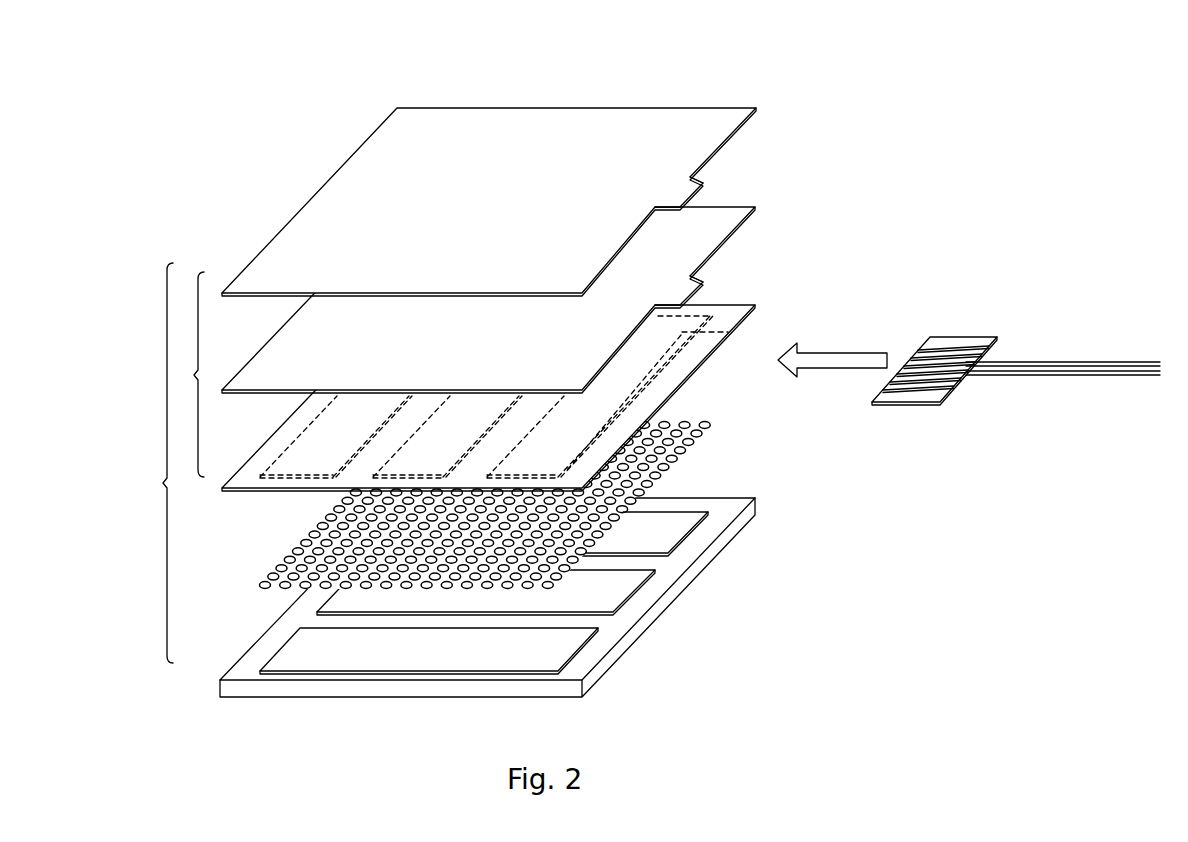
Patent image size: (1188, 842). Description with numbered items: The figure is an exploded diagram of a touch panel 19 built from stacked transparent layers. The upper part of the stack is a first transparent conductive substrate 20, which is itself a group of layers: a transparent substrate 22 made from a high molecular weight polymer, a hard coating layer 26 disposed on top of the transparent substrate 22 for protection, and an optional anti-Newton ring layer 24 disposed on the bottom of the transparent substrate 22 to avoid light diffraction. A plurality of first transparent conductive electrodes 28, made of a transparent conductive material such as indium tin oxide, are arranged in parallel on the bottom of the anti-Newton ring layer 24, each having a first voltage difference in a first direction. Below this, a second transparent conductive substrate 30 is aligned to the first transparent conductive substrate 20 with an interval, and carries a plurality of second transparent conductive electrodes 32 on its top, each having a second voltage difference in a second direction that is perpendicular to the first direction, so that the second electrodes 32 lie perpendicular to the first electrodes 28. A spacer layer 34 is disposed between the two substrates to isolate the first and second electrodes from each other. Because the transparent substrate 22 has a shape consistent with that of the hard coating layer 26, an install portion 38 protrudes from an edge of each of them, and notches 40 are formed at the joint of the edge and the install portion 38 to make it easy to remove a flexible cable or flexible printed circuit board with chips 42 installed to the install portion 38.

The touch panel 19 is at (155, 463).
The first transparent conductive substrate 20 is at (187, 374).
The transparent substrate 22 is at (722, 228).
The anti-Newton ring layer 24 is at (670, 382).
The hard coating layer 26 is at (679, 118).
The first transparent conductive electrodes 28 is at (728, 333).
The second transparent conductive substrate 30 is at (687, 595).
The second transparent conductive electrodes 32 is at (693, 535).
The spacer layer 34 is at (704, 452).
The install portion 38 is at (689, 197).
The notches 40 is at (689, 178).
The flexible printed circuit board with chips 42 is at (972, 338).